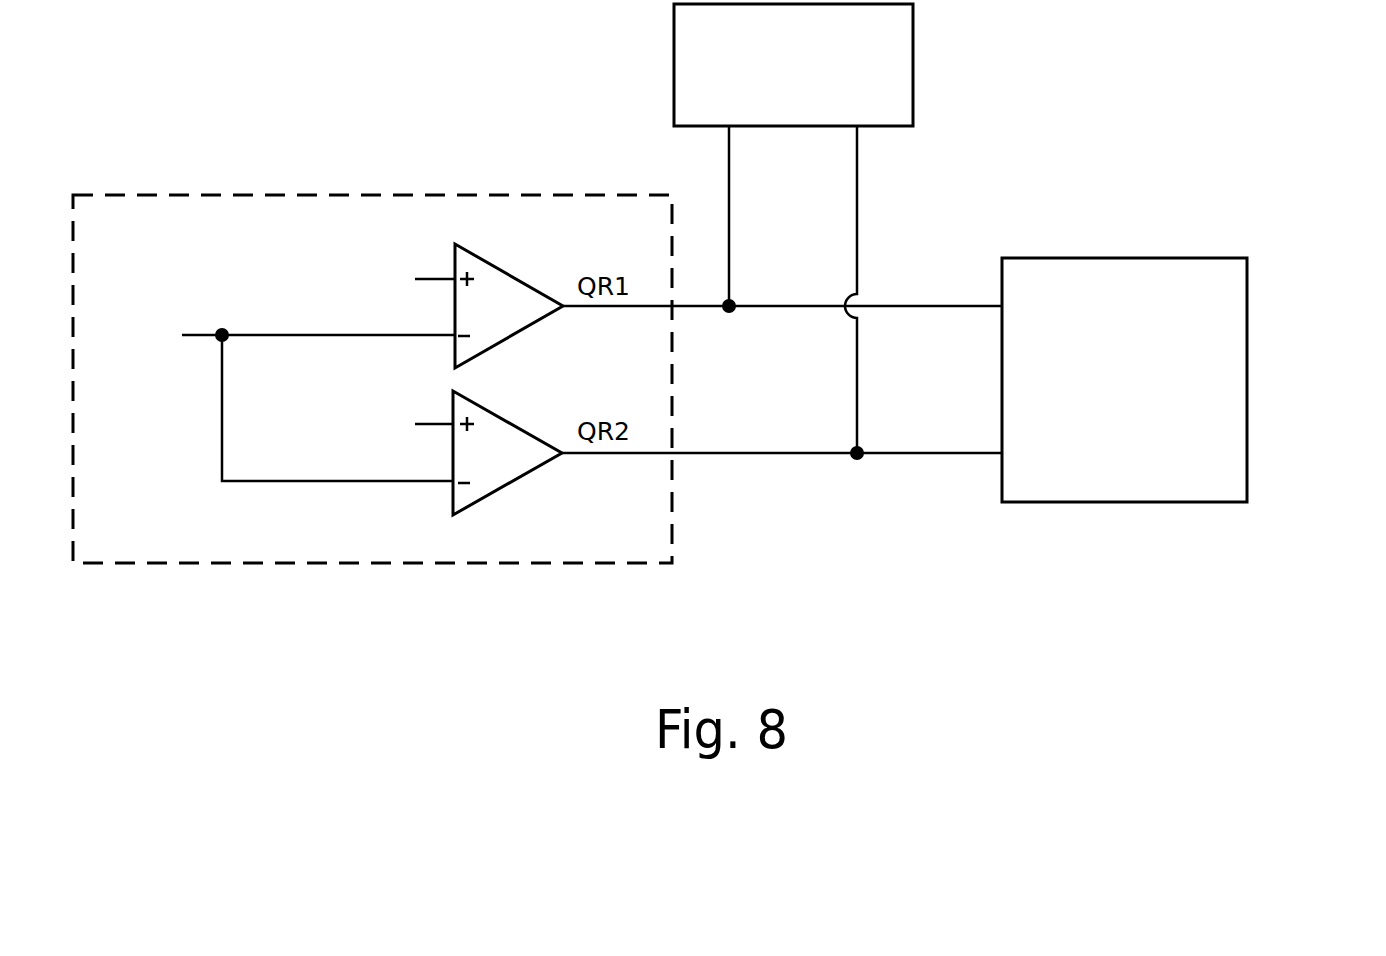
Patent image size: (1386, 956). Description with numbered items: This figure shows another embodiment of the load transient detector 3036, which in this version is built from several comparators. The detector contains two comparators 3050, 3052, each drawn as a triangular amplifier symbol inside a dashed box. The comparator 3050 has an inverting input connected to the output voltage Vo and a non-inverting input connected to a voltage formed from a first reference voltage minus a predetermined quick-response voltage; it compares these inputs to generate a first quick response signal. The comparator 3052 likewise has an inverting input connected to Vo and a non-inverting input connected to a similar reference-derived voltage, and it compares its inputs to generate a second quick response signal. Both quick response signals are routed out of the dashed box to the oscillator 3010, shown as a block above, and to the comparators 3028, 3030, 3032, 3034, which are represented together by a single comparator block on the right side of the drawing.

The oscillator 3010 is at (913, 62).
The comparator 3028 is at (1187, 334).
The comparator 3030 is at (1187, 334).
The comparator 3032 is at (1187, 334).
The comparator 3034 is at (1222, 200).
The load transient detector 3036 is at (375, 195).
The comparator 3050 is at (510, 270).
The comparator 3052 is at (507, 418).